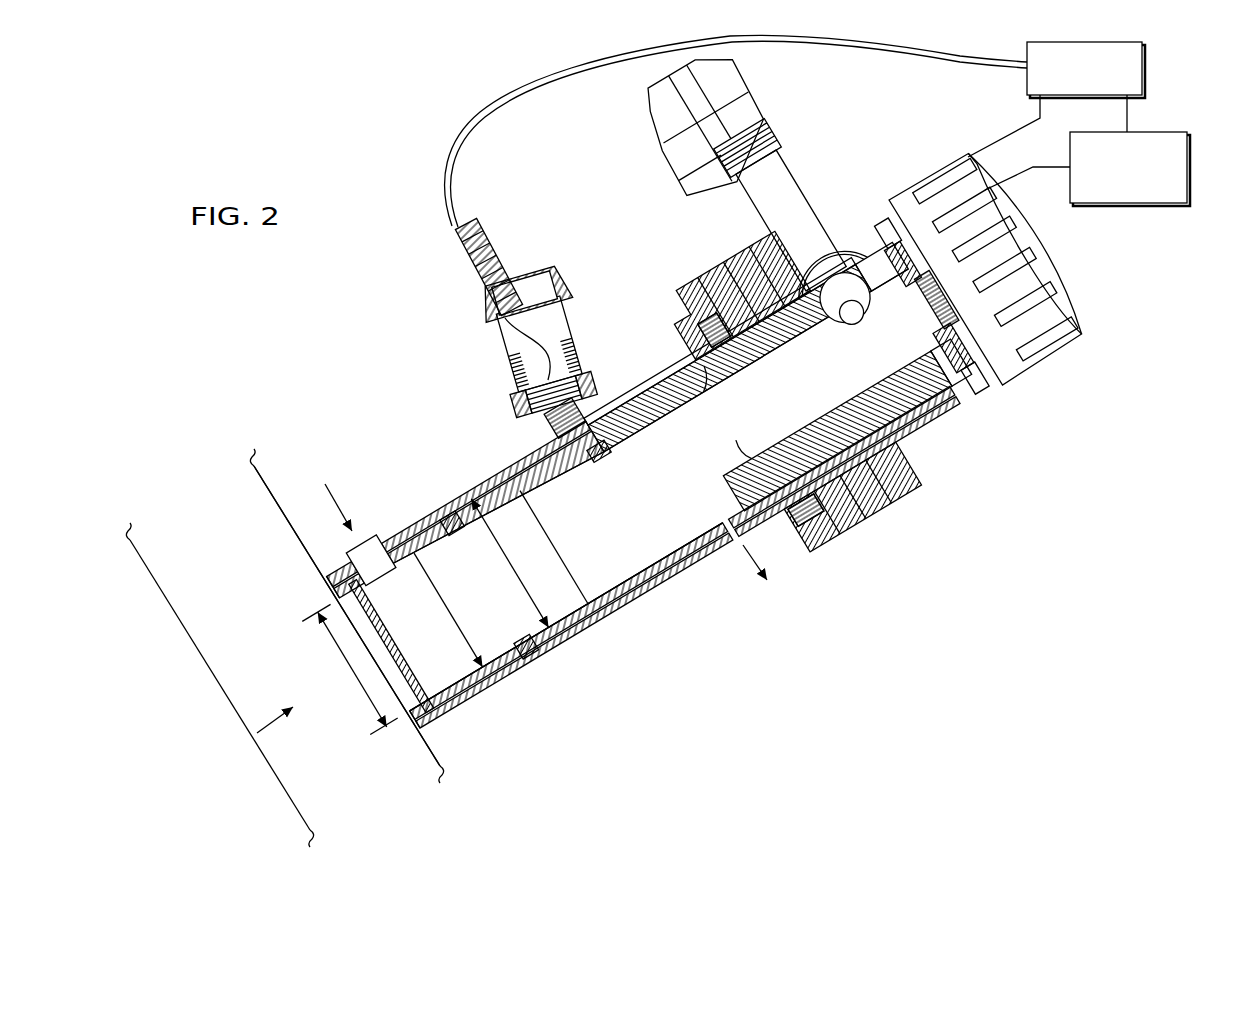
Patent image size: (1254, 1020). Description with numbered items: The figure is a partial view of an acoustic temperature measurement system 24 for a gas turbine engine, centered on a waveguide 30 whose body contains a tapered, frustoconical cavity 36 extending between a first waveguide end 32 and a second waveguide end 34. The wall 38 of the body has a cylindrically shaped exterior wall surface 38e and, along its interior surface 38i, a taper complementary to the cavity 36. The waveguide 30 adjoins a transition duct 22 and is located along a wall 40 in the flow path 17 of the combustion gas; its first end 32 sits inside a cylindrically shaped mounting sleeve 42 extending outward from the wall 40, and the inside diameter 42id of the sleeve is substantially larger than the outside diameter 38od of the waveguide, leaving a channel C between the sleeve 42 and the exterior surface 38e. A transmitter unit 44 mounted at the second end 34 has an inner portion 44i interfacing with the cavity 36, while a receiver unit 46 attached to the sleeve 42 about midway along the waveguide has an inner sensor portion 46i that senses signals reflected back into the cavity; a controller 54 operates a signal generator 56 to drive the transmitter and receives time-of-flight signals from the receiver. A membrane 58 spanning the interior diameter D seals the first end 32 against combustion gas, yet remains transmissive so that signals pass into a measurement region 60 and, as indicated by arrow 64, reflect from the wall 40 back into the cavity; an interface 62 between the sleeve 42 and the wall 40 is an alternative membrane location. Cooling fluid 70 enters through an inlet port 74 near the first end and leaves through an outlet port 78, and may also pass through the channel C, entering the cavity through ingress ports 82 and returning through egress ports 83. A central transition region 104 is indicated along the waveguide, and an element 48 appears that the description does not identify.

The flow path 17 is at (258, 576).
The transition duct 22 is at (347, 616).
The acoustic temperature measurement system 24 is at (388, 142).
The waveguide 30 is at (566, 655).
The first waveguide end 32 is at (438, 731).
The second waveguide end 34 is at (972, 377).
The cavity 36 is at (714, 459).
The wall 38 is at (640, 620).
The exterior wall surface 38e is at (899, 406).
The interior surface 38i is at (632, 556).
The outside diameter 38od is at (447, 604).
The wall 40 is at (210, 677).
The mounting sleeve 42 is at (515, 462).
The inside diameter 42id is at (497, 478).
The transmitter unit 44 is at (1048, 360).
The inner portion 44i is at (927, 322).
The receiver unit 46 is at (473, 337).
The inner sensor portion 46i is at (604, 453).
The transducer housing 48 is at (741, 180).
The controller 54 is at (1143, 55).
The signal generator 56 is at (1190, 164).
The membrane 58 is at (384, 602).
The measurement region 60 is at (311, 691).
The interface 62 is at (330, 576).
The arrow 64 is at (272, 722).
The cooling fluid 70 is at (328, 500).
The inlet port 74 is at (365, 540).
The outlet port 78 is at (735, 532).
The ingress ports 82 is at (452, 545).
The egress ports 83 is at (712, 383).
The central transition region 104 is at (532, 506).
The channel C is at (675, 598).
The diameter D is at (322, 630).